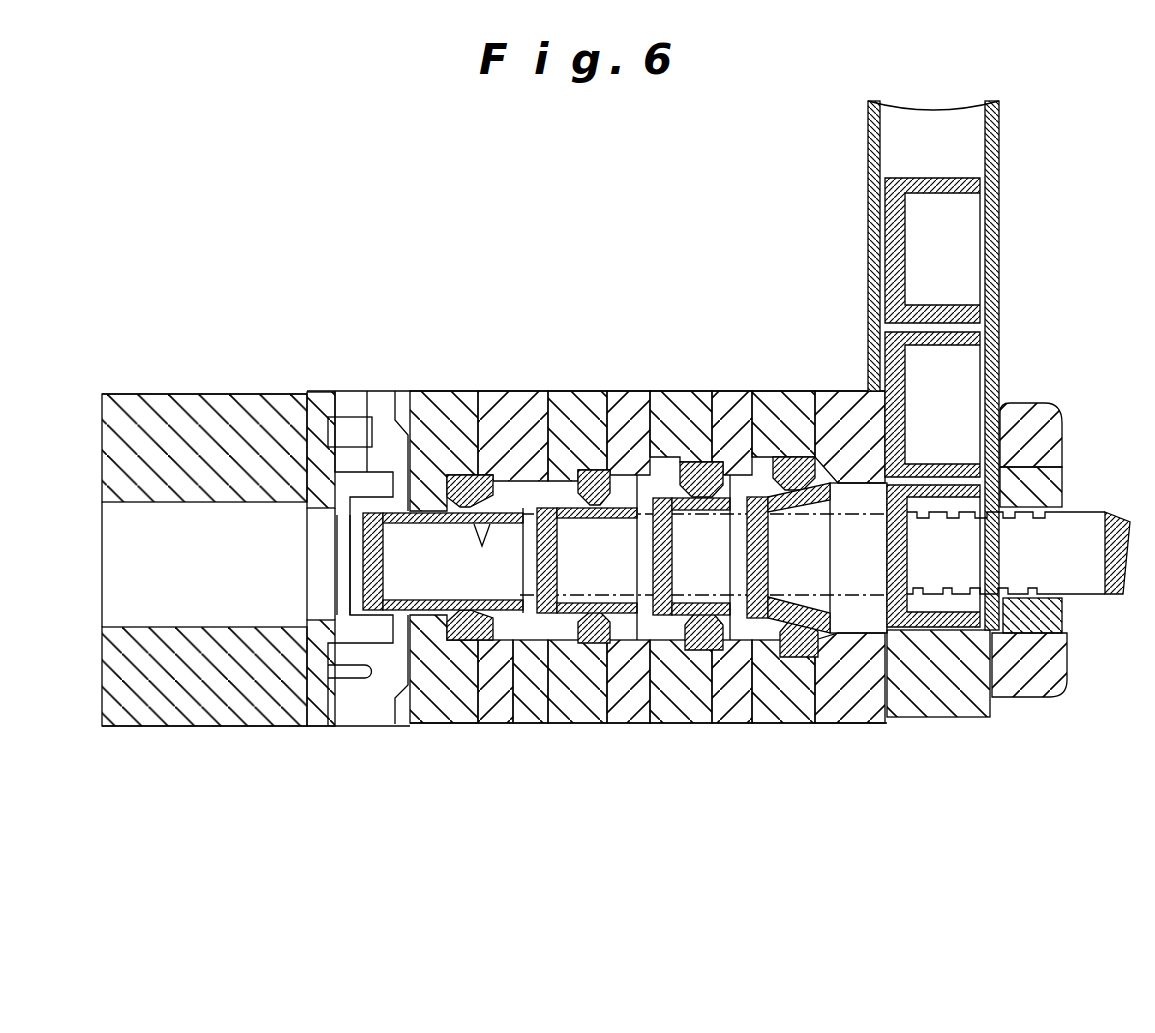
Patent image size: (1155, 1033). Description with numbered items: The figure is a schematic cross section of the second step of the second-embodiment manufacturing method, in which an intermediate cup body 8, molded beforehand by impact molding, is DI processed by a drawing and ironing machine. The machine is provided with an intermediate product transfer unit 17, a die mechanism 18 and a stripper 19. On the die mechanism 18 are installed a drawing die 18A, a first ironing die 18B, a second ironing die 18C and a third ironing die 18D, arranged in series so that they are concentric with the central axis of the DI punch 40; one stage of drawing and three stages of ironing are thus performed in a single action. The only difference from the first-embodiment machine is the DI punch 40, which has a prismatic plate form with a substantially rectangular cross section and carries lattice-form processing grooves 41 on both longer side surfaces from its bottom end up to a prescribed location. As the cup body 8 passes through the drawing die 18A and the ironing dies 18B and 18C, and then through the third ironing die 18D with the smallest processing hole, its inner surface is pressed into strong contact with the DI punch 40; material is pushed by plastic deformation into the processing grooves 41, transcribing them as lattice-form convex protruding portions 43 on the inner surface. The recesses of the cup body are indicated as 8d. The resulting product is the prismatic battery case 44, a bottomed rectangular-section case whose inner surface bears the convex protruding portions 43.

The intermediate cup body 8 is at (915, 178).
The recess of channel member 8d is at (385, 558).
The intermediate product transfer unit 17 is at (999, 262).
The die mechanism 18 is at (825, 808).
The drawing die 18A is at (793, 662).
The first ironing die 18B is at (703, 655).
The second ironing die 18C is at (592, 643).
The third ironing die 18D is at (463, 636).
The stripper 19 is at (362, 640).
The DI punch 40 is at (1085, 540).
The processing grooves 41 is at (1025, 507).
The convex protruding portions 43 is at (482, 547).
The prismatic battery case 44 is at (350, 553).